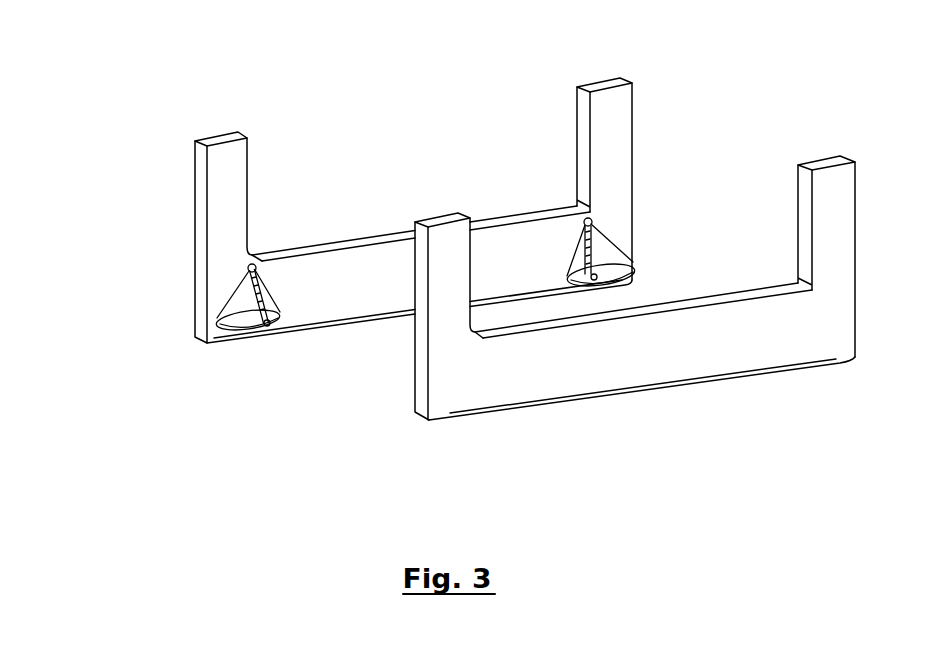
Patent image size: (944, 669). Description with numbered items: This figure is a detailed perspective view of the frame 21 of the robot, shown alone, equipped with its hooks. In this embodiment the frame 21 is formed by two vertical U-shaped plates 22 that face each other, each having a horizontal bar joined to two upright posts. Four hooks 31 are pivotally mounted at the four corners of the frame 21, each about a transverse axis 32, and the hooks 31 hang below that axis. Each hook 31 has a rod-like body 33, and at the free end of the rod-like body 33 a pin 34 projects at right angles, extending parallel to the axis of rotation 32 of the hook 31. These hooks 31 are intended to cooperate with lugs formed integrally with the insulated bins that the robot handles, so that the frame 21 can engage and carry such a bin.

The frame 21 is at (770, 101).
The vertical U-shaped plate 22 is at (230, 188).
The hook 31 is at (250, 300).
The transverse axis 32 is at (250, 268).
The rod-like body 33 is at (250, 311).
The pin 34 is at (268, 318).